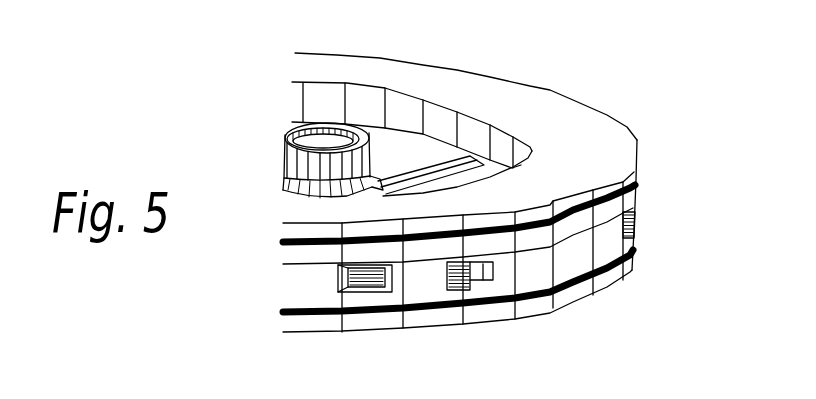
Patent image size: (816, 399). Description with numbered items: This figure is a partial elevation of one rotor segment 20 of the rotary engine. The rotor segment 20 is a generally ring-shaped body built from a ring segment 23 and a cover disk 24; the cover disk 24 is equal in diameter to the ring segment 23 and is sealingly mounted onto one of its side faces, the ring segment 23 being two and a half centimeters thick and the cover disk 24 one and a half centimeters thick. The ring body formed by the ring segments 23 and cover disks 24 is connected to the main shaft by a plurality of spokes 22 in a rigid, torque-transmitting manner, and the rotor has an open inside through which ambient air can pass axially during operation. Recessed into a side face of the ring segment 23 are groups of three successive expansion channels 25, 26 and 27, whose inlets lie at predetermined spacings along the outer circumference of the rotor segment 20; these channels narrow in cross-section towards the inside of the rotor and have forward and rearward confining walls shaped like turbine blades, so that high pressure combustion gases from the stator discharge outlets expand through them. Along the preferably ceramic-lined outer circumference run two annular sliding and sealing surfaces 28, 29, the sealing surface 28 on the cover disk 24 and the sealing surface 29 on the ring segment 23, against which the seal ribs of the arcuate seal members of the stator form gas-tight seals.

The rotor segment 20 is at (640, 127).
The spokes 22 is at (438, 173).
The ring segment 23 is at (568, 270).
The cover disk 24 is at (598, 142).
The expansion channel 25 is at (362, 283).
The expansion channel 26 is at (460, 280).
The expansion channel 27 is at (635, 220).
The annular sealing surface 28 is at (572, 200).
The annular sliding and sealing surface 29 is at (618, 278).